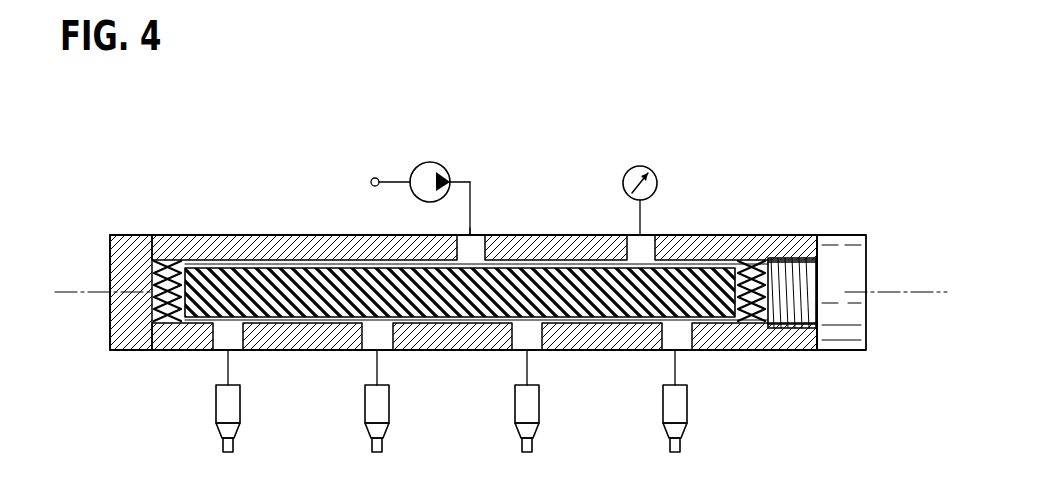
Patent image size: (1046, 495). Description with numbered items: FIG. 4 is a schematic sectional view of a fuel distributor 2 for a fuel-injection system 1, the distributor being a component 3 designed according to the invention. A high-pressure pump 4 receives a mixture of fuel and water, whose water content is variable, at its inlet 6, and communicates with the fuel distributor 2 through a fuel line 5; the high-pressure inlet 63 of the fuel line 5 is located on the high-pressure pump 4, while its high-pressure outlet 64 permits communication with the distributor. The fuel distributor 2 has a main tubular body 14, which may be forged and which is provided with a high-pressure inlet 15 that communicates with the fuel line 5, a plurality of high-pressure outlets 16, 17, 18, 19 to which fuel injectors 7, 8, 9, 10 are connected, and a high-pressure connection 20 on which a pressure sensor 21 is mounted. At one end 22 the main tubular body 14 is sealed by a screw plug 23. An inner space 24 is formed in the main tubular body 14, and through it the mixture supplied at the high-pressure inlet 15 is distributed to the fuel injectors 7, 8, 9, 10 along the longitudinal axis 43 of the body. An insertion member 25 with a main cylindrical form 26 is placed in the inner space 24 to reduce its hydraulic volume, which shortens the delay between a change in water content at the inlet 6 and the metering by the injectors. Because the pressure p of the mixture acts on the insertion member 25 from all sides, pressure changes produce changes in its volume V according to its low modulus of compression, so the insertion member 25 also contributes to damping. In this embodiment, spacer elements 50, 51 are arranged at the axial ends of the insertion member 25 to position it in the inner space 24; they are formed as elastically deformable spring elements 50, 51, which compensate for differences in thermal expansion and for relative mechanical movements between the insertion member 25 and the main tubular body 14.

The fuel-injection system 1 is at (501, 266).
The fuel distributor 2 is at (518, 279).
The component 3 is at (518, 279).
The high-pressure pump 4 is at (428, 159).
The fuel line 5 is at (480, 176).
The inlet 6 is at (389, 135).
The fuel injector 7 is at (249, 401).
The fuel injector 8 is at (397, 401).
The fuel injector 9 is at (547, 401).
The fuel injector 10 is at (703, 401).
The main tubular body 14 is at (463, 269).
The high-pressure inlet 15 is at (504, 224).
The high-pressure outlet 16 is at (255, 358).
The high-pressure outlet 17 is at (404, 358).
The high-pressure outlet 18 is at (553, 358).
The high-pressure outlet 19 is at (703, 358).
The high-pressure connection 20 is at (669, 224).
The pressure sensor 21 is at (640, 176).
The end 22 is at (806, 326).
The screw plug 23 is at (871, 292).
The inner space 24 is at (784, 332).
The insertion member 25 is at (460, 253).
The main cylindrical form 26 is at (476, 237).
The longitudinal axis 43 is at (501, 263).
The spacer element 50 is at (169, 255).
The spacer element 51 is at (755, 255).
The high-pressure inlet 63 is at (454, 131).
The high-pressure outlet 64 is at (498, 199).
The pressure p is at (843, 321).
The volume V is at (618, 353).